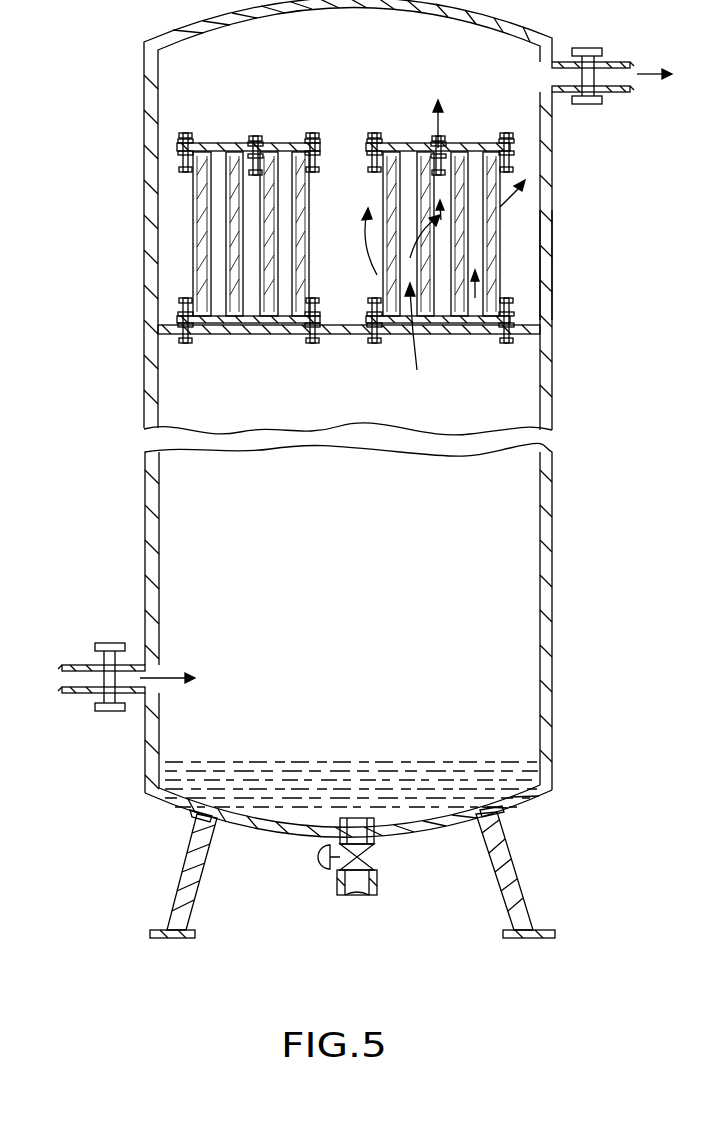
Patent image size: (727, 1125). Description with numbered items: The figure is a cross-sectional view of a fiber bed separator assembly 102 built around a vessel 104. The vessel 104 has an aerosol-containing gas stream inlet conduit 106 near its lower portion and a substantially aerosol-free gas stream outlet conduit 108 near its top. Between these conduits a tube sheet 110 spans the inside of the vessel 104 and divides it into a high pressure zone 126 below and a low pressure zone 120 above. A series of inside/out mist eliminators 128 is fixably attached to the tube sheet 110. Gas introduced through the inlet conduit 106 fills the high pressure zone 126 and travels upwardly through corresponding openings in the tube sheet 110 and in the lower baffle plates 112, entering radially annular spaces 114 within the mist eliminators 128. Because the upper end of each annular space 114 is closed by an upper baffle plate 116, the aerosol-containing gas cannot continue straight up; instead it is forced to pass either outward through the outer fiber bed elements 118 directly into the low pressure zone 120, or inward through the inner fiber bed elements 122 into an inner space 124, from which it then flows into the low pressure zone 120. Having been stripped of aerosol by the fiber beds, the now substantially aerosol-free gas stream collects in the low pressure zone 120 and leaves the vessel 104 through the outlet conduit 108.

The fiber bed separator assembly 102 is at (580, 237).
The vessel 104 is at (552, 305).
The aerosol-containing gas stream inlet conduit 106 is at (66, 672).
The aerosol-free gas stream outlet conduit 108 is at (636, 74).
The tube sheet 110 is at (368, 336).
The lower baffle plates 112 is at (248, 316).
The radially annular spaces 114 is at (217, 156).
The upper baffle plate 116 is at (287, 147).
The outer fiber bed elements 118 is at (208, 150).
The low pressure zone 120 is at (352, 36).
The inner fiber bed elements 122 is at (266, 323).
The space 124 is at (237, 318).
The high pressure zone 126 is at (368, 553).
The inside/out mist eliminators 128 is at (270, 116).